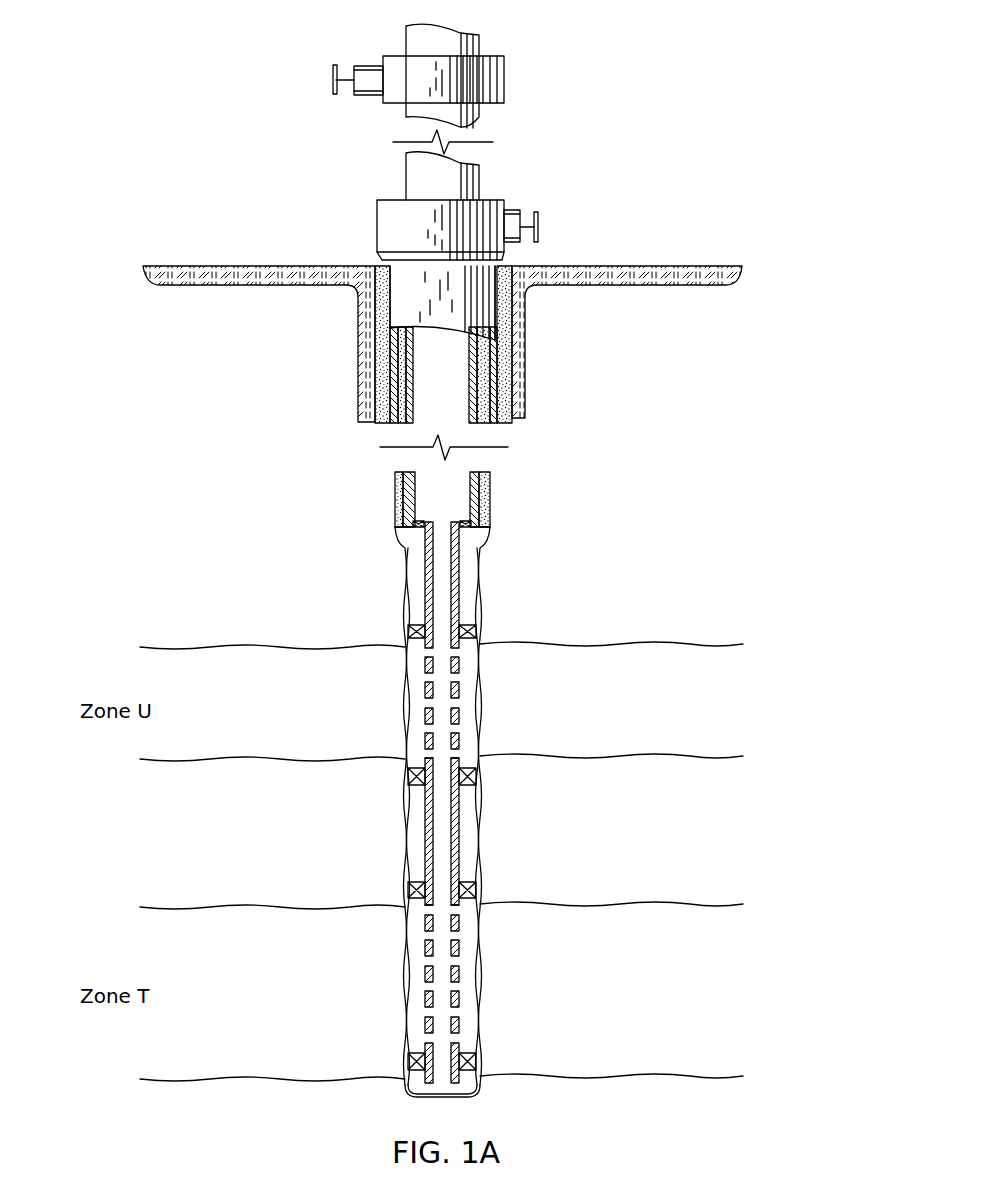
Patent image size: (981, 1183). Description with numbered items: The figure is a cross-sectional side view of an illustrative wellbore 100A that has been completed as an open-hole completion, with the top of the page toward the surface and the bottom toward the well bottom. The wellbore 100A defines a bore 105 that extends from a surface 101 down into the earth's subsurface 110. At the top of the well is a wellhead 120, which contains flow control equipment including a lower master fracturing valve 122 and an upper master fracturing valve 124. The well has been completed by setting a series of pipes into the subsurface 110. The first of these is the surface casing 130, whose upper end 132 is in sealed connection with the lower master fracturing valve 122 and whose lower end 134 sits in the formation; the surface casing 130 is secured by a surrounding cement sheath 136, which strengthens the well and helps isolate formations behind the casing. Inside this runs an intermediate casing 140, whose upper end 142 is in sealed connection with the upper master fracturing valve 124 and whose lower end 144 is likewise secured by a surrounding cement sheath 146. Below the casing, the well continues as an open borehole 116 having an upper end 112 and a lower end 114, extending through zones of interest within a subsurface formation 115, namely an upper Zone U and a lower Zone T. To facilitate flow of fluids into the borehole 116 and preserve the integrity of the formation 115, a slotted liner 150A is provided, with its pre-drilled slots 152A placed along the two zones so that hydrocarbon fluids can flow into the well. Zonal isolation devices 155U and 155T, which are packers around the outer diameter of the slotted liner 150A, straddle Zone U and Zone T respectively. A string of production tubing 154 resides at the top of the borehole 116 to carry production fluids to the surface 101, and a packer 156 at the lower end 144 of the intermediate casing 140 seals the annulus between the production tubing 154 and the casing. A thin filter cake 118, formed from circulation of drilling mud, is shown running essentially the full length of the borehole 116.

The wellbore 100A is at (218, 128).
The surface 101 is at (680, 266).
The bore 105 is at (470, 413).
The subsurface 110 is at (168, 520).
The upper end of borehole 112 is at (403, 568).
The lower end of borehole 114 is at (412, 1097).
The subsurface formation 115 is at (731, 837).
The borehole 116 is at (403, 857).
The filter cake 118 is at (473, 612).
The wellhead 120 is at (556, 171).
The lower master fracturing valve 122 is at (539, 218).
The upper master fracturing valve 124 is at (333, 73).
The surface casing 130 is at (477, 300).
The upper end of surface casing 132 is at (377, 220).
The lower end of surface casing 134 is at (378, 410).
The cement sheath 136 is at (510, 377).
The intermediate casing 140 is at (398, 384).
The upper end of intermediate casing 142 is at (406, 170).
The lower end of intermediate casing 144 is at (490, 485).
The cement sheath 146 is at (398, 482).
The slotted liner 150A is at (425, 813).
The slots 152A is at (425, 702).
The production tubing 154 is at (457, 556).
The zonal isolation devices 155U is at (409, 632).
The zonal isolation devices 155T is at (473, 890).
The packer 156 is at (416, 522).